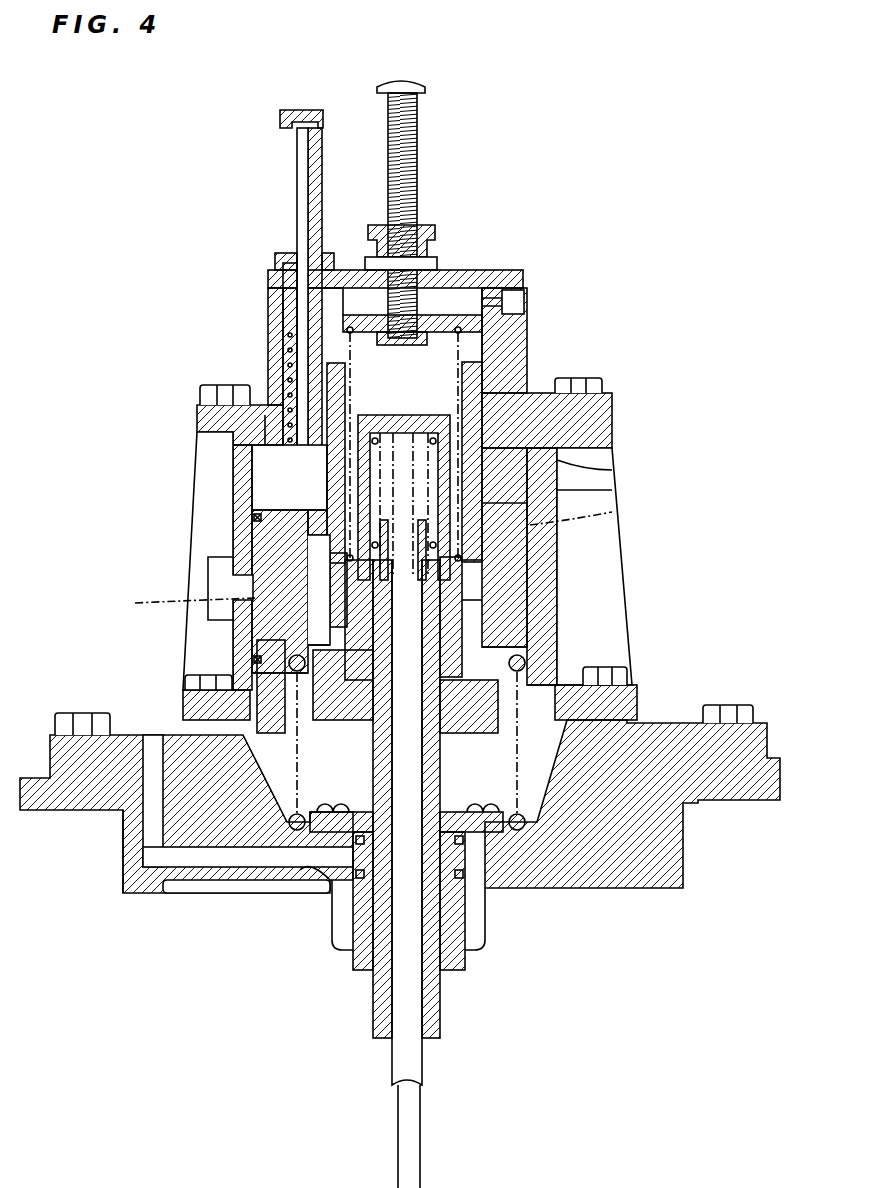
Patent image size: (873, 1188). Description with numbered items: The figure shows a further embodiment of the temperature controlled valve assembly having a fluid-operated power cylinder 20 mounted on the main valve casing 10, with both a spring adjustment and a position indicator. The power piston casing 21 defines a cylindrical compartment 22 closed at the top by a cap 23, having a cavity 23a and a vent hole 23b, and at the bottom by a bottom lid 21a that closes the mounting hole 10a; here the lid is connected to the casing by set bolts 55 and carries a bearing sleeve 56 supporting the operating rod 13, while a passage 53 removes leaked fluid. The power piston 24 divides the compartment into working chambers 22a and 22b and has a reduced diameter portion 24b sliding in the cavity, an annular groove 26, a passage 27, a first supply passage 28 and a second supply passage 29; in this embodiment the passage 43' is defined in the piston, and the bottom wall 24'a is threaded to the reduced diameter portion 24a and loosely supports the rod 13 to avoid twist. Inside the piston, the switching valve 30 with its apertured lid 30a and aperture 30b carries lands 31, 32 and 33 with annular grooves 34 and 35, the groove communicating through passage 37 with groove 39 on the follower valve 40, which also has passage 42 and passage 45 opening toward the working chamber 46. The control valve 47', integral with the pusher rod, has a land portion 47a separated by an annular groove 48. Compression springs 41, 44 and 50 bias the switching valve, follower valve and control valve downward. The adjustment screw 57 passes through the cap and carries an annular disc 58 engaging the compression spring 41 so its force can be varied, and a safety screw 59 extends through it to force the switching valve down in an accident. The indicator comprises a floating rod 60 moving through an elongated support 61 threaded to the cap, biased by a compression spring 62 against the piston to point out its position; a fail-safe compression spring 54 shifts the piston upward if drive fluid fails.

The safety screw 59 is at (418, 115).
The adjustment screw 57 is at (432, 243).
The annular disc 58 is at (438, 265).
The cap 23 is at (470, 285).
The cavity 23a is at (500, 300).
The compression spring 41 is at (465, 320).
The vent hole 23b is at (478, 330).
The aperture 30b is at (515, 305).
The elongated support 61 is at (318, 225).
The floating rod 60 is at (300, 210).
The compression spring 62 is at (290, 395).
The follower valve 40 is at (289, 477).
The switching valve 30 is at (480, 400).
The apertured lid 30a is at (472, 370).
The compression spring 50 is at (395, 460).
The first supply passage 28 is at (530, 595).
The operating rod 13 is at (445, 1003).
The power piston casing 21 is at (580, 430).
The compression spring 44 is at (265, 415).
The cylindrical compartment 22 is at (540, 765).
The working chamber 22b is at (590, 475).
The power piston 24 is at (622, 474).
The fluid-operated power cylinder 20 is at (640, 490).
The second supply passage 29 is at (612, 512).
The reduced diameter portion 24b is at (300, 490).
The passage 43' is at (190, 549).
The passage 42 is at (332, 560).
The annular groove 35 is at (345, 580).
The annular groove 26 is at (320, 600).
The bottom lid 21a is at (220, 590).
The passage 27 is at (179, 595).
The passage 37 is at (330, 640).
The annular groove 34 is at (300, 665).
The set bolts 55 is at (190, 675).
The land 33 is at (510, 565).
The passage 45 is at (540, 600).
The annular groove 39 is at (520, 635).
The land 32 is at (520, 670).
The land 31 is at (530, 700).
The land portion 47a is at (470, 490).
The working chamber 22a is at (545, 705).
The reduced diameter portion 24a is at (240, 735).
The main valve casing 10 is at (70, 815).
The mounting hole 10a is at (705, 800).
The passage 53 is at (200, 855).
The fail-safe compression spring 54 is at (265, 850).
The bottom wall 24'a is at (120, 851).
The bearing sleeve 56 is at (455, 905).
The control valve 47' is at (300, 906).
The annular groove 48 is at (345, 700).
The working chamber 46 is at (485, 700).